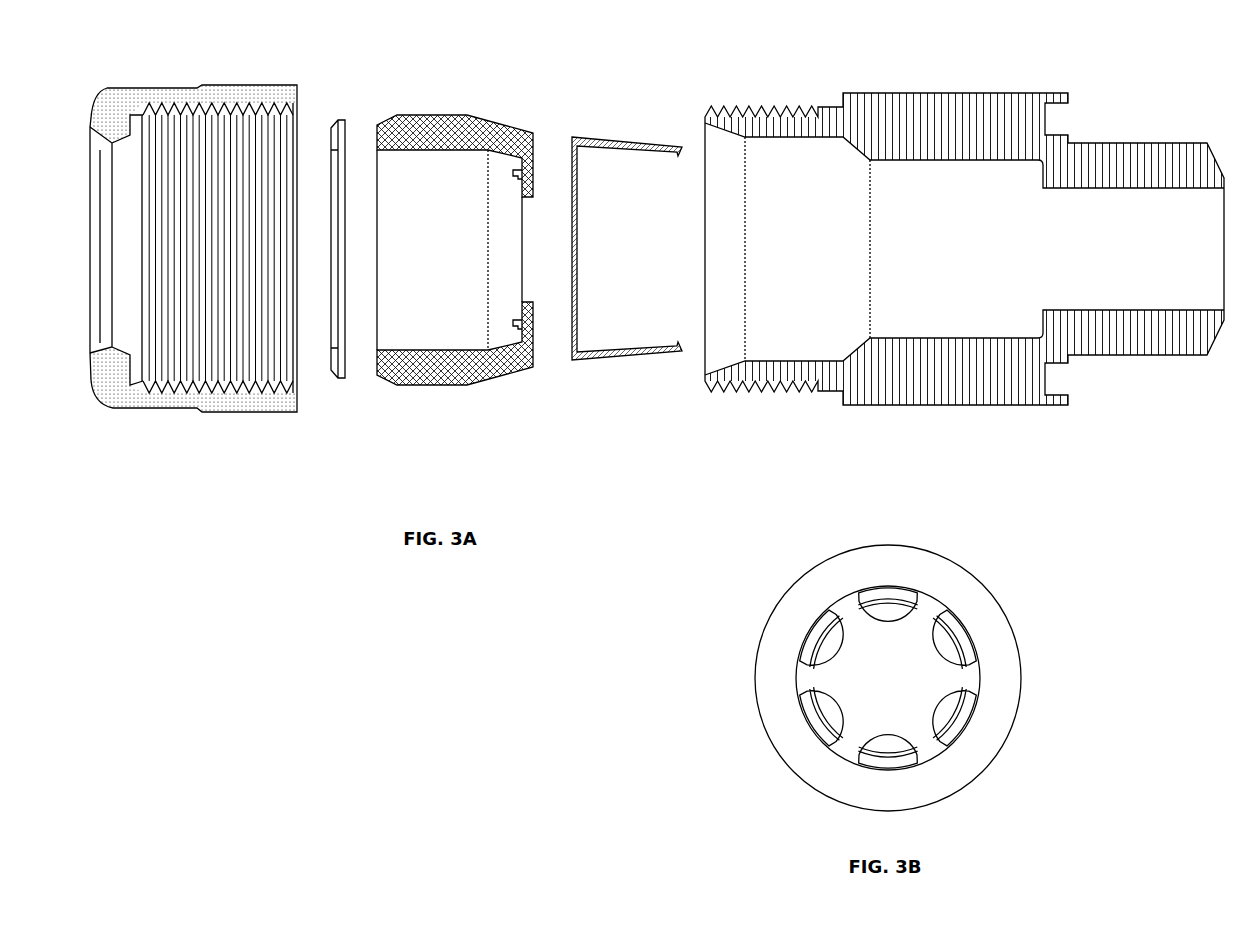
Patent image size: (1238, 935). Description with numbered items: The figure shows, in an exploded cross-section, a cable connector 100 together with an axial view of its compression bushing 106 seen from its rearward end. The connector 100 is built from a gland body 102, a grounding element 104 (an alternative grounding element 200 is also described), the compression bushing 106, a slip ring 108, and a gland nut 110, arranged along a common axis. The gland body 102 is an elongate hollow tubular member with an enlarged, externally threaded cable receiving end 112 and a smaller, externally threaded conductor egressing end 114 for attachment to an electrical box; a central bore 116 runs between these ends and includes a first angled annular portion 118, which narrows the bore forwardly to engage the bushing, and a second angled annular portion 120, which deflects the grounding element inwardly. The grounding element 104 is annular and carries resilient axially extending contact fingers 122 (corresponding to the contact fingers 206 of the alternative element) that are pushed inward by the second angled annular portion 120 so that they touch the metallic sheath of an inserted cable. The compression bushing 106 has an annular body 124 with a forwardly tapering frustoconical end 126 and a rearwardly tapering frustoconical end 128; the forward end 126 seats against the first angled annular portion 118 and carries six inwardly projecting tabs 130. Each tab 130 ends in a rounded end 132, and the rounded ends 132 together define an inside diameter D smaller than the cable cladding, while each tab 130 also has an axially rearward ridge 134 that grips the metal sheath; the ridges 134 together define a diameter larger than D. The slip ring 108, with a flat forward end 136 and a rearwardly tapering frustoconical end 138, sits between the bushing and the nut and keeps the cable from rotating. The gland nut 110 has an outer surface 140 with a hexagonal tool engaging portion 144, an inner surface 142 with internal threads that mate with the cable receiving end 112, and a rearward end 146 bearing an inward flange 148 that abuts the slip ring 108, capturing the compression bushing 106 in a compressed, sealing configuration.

In FIG. 3A, the cable connector 100 is at (652, 98).
In FIG. 3A, the gland body 102 is at (964, 263).
In FIG. 3A, the grounding element 104 is at (611, 306).
In FIG. 3A, the grounding element 200 is at (611, 306).
In FIG. 3A, the compression bushing 106 is at (474, 271).
In FIG. 3B, the compression bushing 106 is at (887, 673).
In FIG. 3A, the slip ring 108 is at (345, 240).
In FIG. 3A, the gland nut 110 is at (199, 251).
In FIG. 3A, the cable receiving end 112 is at (964, 278).
In FIG. 3A, the conductor egressing end 114 is at (941, 281).
In FIG. 3A, the central bore 116 is at (964, 278).
In FIG. 3A, the first angled annular portion 118 is at (964, 278).
In FIG. 3A, the second angled annular portion 120 is at (964, 278).
In FIG. 3A, the contact fingers 122 is at (627, 248).
In FIG. 3A, the contact fingers 206 is at (628, 351).
In FIG. 3A, the annular body 124 is at (497, 128).
In FIG. 3A, the forwardly tapering frustoconical end 126 is at (470, 271).
In FIG. 3A, the rearwardly tapering frustoconical end 128 is at (470, 271).
In FIG. 3B, the rearwardly tapering frustoconical end 128 is at (887, 673).
In FIG. 3A, the tabs 130 is at (531, 249).
In FIG. 3B, the tabs 130 is at (934, 651).
In FIG. 3A, the rounded end 132 is at (512, 199).
In FIG. 3B, the rounded end 132 is at (974, 713).
In FIG. 3A, the ridge 134 is at (513, 175).
In FIG. 3B, the ridge 134 is at (872, 746).
In FIG. 3A, the flat forward end 136 is at (329, 240).
In FIG. 3A, the rearwardly tapering frustoconical end 138 is at (328, 124).
In FIG. 3A, the outer surface 140 is at (201, 251).
In FIG. 3A, the inner surface 142 is at (227, 300).
In FIG. 3A, the hexagonal tool engaging portion 144 is at (288, 365).
In FIG. 3A, the rearward end 146 is at (193, 218).
In FIG. 3A, the flange 148 is at (105, 96).
In FIG. 3B, the inside diameter D is at (888, 632).